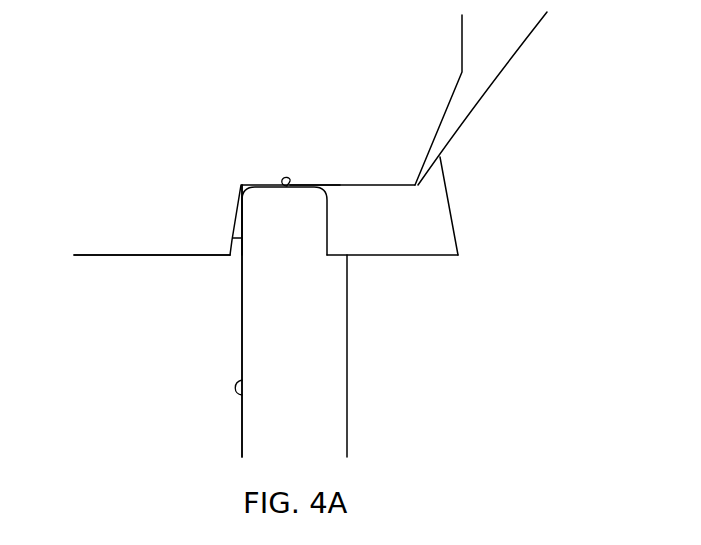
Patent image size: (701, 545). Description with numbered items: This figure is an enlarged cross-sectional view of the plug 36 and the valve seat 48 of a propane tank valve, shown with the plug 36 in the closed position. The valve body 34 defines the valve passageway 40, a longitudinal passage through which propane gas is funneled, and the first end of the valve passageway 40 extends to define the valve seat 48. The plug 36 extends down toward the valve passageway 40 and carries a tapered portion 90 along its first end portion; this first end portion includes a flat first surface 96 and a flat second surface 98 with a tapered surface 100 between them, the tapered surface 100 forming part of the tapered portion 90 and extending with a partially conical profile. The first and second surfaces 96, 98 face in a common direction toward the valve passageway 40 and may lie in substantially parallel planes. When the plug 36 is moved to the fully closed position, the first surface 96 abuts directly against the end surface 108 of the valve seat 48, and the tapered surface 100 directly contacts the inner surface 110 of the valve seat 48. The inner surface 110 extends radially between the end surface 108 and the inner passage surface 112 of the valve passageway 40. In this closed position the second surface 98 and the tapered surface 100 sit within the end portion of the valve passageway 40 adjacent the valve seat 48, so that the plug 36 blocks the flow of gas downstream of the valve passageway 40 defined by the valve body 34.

The valve body 34 is at (263, 435).
The plug 36 is at (450, 152).
The valve passageway 40 is at (242, 392).
The valve seat 48 is at (312, 185).
The tapered portion 90 is at (168, 255).
The first surface 96 is at (362, 187).
The second surface 98 is at (95, 255).
The tapered surface 100 is at (233, 238).
The end surface 108 is at (287, 187).
The inner surface 110 is at (240, 188).
The inner passage surface 112 is at (241, 344).